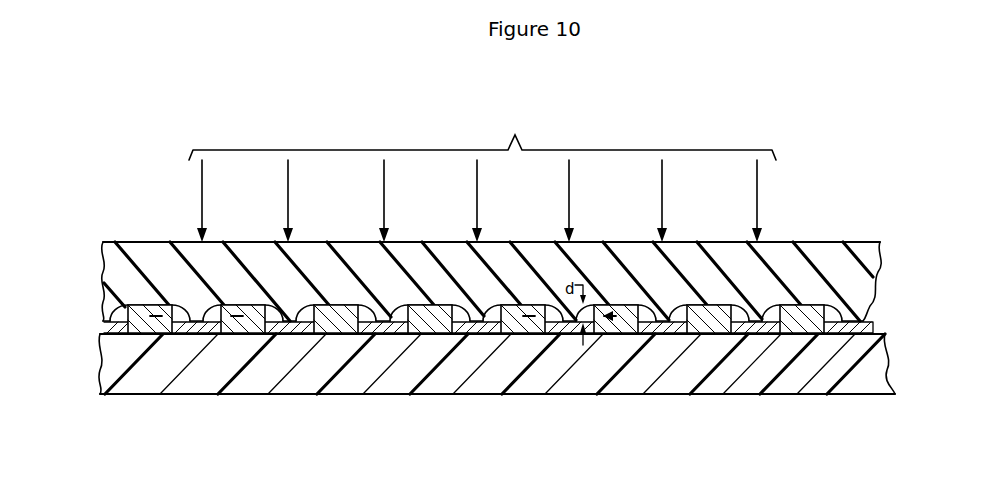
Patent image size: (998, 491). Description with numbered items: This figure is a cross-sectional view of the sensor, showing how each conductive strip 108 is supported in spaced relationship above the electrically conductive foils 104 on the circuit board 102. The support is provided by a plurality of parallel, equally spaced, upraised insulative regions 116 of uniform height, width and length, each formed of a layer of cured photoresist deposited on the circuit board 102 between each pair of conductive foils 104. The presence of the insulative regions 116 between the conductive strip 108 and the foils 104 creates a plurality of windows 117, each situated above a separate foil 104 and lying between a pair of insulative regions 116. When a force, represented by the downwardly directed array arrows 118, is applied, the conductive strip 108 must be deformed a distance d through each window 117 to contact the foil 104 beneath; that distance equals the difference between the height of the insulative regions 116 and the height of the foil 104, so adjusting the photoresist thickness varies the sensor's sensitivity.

The circuit board 102 is at (875, 375).
The conductive foil 104 is at (168, 334).
The conductive strip 108 is at (847, 262).
The upraised insulative region 116 is at (106, 326).
The window 117 is at (250, 317).
The array arrows 118 is at (535, 121).